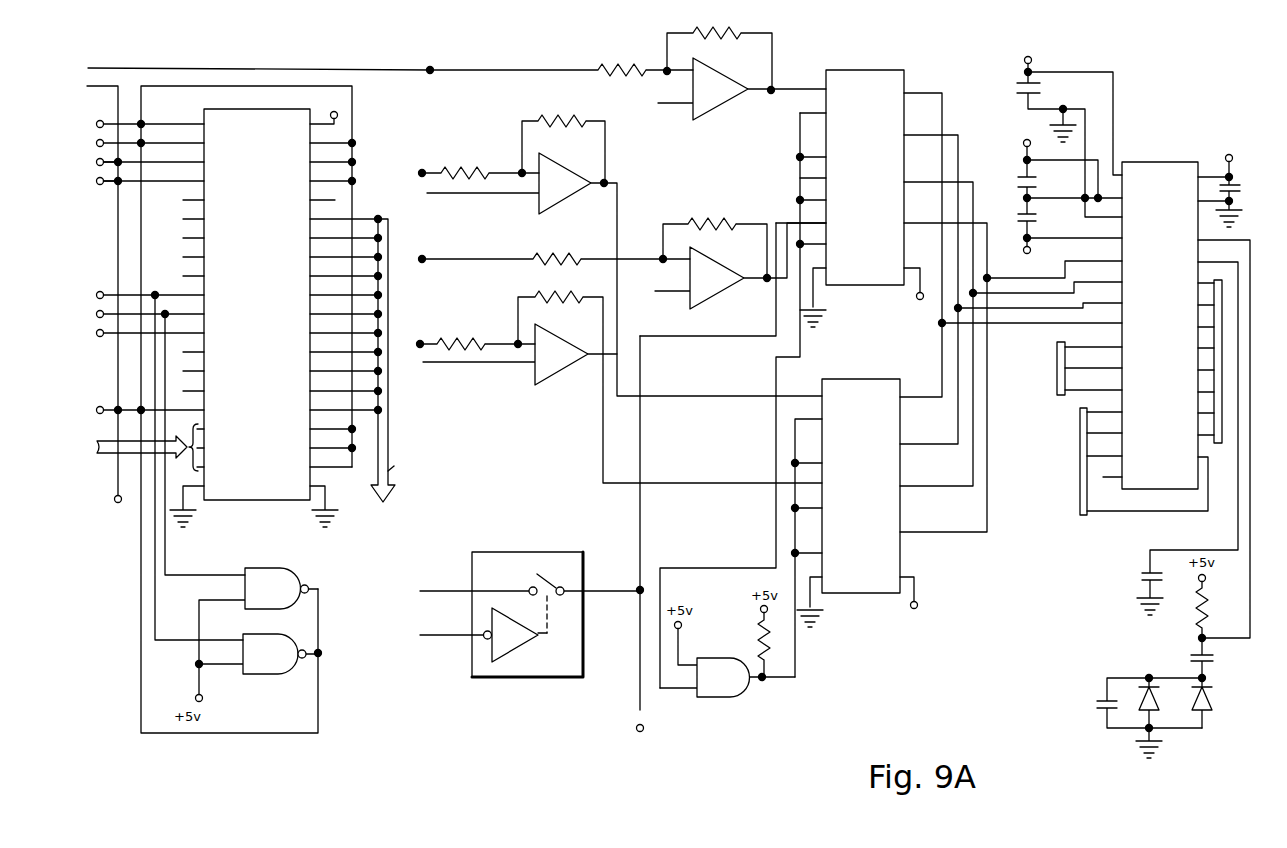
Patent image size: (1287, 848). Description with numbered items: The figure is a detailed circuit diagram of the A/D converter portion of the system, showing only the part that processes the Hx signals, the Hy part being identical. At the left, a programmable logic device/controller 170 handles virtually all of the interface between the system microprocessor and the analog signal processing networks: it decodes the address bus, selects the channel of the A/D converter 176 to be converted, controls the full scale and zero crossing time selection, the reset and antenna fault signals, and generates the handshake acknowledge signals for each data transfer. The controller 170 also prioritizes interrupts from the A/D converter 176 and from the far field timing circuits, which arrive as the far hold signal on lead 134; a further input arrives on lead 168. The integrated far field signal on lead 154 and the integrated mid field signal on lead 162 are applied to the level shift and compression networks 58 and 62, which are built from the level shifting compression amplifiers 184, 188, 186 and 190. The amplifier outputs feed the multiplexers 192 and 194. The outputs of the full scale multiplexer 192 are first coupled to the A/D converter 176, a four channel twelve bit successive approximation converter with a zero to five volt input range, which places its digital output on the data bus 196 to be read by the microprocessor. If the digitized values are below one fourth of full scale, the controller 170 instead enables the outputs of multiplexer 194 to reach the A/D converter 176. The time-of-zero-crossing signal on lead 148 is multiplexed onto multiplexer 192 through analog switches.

The programmable logic device/controller 170 is at (256, 115).
The lead 154 is at (457, 64).
The signal line 168 is at (86, 162).
The lead 134 is at (86, 181).
The level shifting compression amplifier 184 is at (730, 83).
The level shift and compression network 58 is at (742, 83).
The level shifting compression amplifier 188 is at (568, 171).
The level shifting compression amplifier 186 is at (729, 271).
The level shift and compression network 62 is at (733, 277).
The level shifting compression amplifier 190 is at (563, 347).
The lead 162 is at (443, 257).
The multiplexer 192 is at (880, 79).
The multiplexer 194 is at (878, 386).
The A/D converter 176 is at (1165, 173).
The data bus 196 is at (1219, 283).
The lead 148 is at (640, 708).